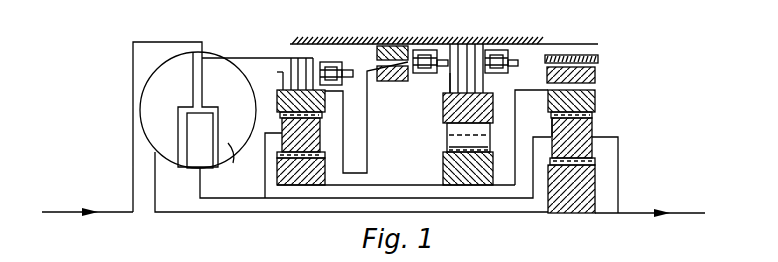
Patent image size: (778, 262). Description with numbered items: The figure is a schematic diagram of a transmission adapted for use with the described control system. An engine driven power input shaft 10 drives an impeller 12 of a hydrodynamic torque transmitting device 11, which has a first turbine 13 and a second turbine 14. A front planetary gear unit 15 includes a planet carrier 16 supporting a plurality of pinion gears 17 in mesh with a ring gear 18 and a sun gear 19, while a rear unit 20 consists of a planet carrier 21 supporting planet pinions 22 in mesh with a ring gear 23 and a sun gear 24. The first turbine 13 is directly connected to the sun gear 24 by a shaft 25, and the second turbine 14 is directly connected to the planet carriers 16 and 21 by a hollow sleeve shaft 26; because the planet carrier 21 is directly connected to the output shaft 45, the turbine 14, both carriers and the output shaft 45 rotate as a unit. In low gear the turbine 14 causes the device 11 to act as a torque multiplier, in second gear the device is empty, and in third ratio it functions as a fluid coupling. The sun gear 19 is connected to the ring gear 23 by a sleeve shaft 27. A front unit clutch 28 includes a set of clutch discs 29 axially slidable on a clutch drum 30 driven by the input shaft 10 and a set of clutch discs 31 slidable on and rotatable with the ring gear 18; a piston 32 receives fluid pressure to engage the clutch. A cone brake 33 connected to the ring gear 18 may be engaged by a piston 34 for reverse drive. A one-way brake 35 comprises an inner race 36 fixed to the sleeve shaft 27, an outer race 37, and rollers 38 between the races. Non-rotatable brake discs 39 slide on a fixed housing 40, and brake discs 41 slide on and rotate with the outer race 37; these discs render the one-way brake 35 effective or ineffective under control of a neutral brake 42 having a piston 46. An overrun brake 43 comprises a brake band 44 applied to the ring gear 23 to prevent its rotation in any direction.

The power input shaft 10 is at (58, 212).
The hydrodynamic torque transmitting device 11 is at (171, 53).
The impeller 12 is at (232, 167).
The first turbine 13 is at (150, 108).
The second turbine 14 is at (193, 158).
The front planetary gear unit 15 is at (312, 192).
The planet carrier 16 is at (263, 182).
The pinion gears 17 is at (320, 147).
The ring gear 18 is at (277, 104).
The sun gear 19 is at (291, 183).
The rear unit 20 is at (602, 204).
The planet carrier 21 is at (618, 168).
The planet pinions 22 is at (580, 130).
The ring gear 23 is at (593, 102).
The sun gear 24 is at (578, 200).
The shaft 25 is at (472, 213).
The hollow sleeve shaft 26 is at (515, 208).
The sleeve shaft 27 is at (395, 185).
The front unit clutch 28 is at (300, 55).
The clutch discs 29 is at (283, 72).
The clutch drum 30 is at (247, 58).
The clutch discs 31 is at (283, 80).
The piston 32 is at (327, 63).
The cone brake 33 is at (385, 45).
The piston 34 is at (423, 50).
The one-way brake 35 is at (440, 135).
The inner race 36 is at (447, 173).
The outer race 37 is at (453, 108).
The rollers 38 is at (483, 137).
The brake discs 39 is at (451, 47).
The fixed housing 40 is at (572, 44).
The brake discs 41 is at (509, 68).
The neutral brake 42 is at (442, 83).
The overrun brake 43 is at (604, 70).
The brake band 44 is at (598, 59).
The output shaft 45 is at (645, 210).
The piston 46 is at (495, 50).